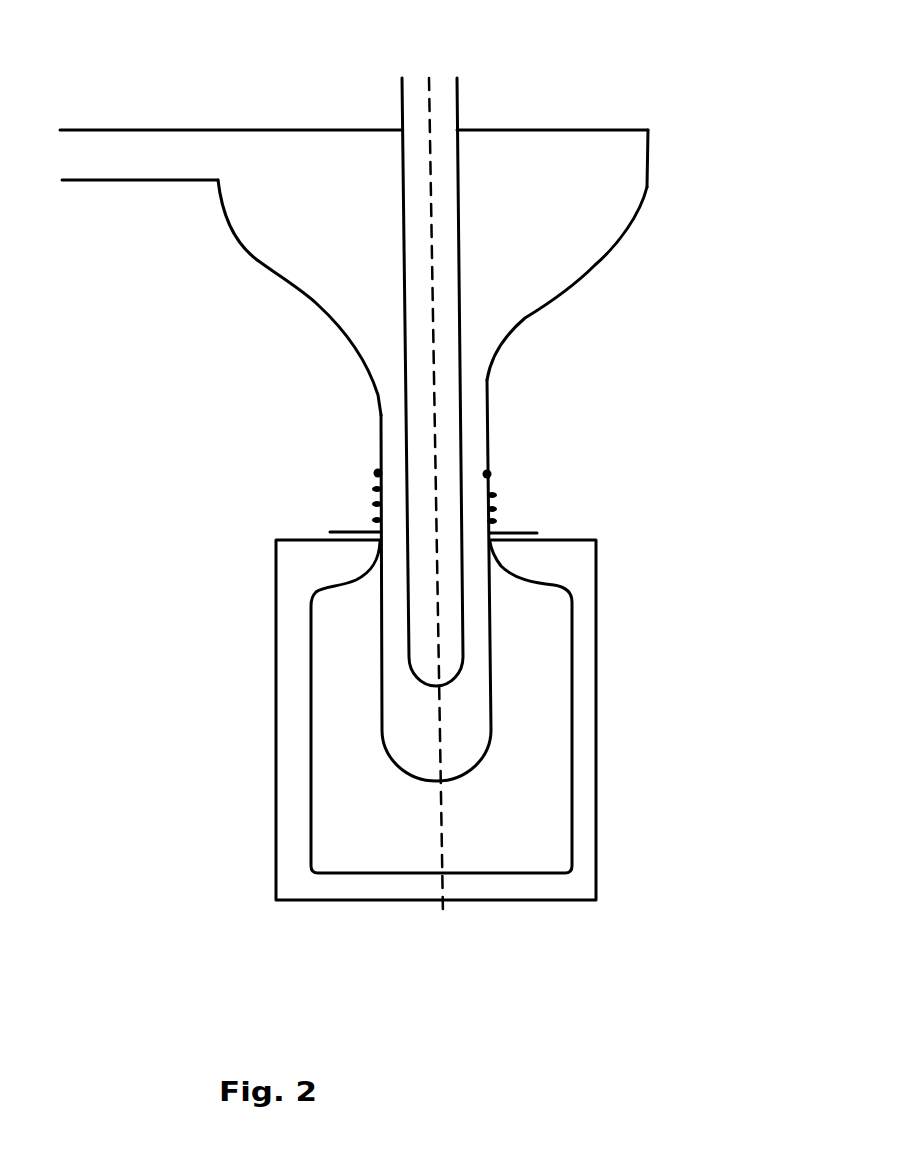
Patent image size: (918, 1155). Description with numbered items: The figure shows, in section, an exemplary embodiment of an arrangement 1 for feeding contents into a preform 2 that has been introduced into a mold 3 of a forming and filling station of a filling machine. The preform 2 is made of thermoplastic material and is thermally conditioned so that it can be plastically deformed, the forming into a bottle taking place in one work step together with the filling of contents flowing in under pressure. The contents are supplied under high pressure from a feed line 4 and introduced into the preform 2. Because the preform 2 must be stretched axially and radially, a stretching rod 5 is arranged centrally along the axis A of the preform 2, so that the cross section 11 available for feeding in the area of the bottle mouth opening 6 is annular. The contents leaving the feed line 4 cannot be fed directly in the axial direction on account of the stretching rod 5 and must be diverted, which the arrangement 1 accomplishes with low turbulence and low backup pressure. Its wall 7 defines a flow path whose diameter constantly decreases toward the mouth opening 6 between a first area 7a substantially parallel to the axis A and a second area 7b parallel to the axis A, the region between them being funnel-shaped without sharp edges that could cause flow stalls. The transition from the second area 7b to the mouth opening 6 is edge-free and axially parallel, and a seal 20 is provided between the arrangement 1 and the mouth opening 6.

The arrangement 1 is at (660, 258).
The preform 2 is at (490, 654).
The mold 3 is at (585, 777).
The feed line 4 is at (125, 160).
The stretching rod 5 is at (460, 88).
The bottle mouth opening 6 is at (495, 508).
The wall 7 is at (543, 305).
The first area 7a is at (650, 146).
The second area 7b is at (378, 447).
The cross section 11 is at (395, 503).
The seal 20 is at (490, 472).
The axis A is at (430, 465).